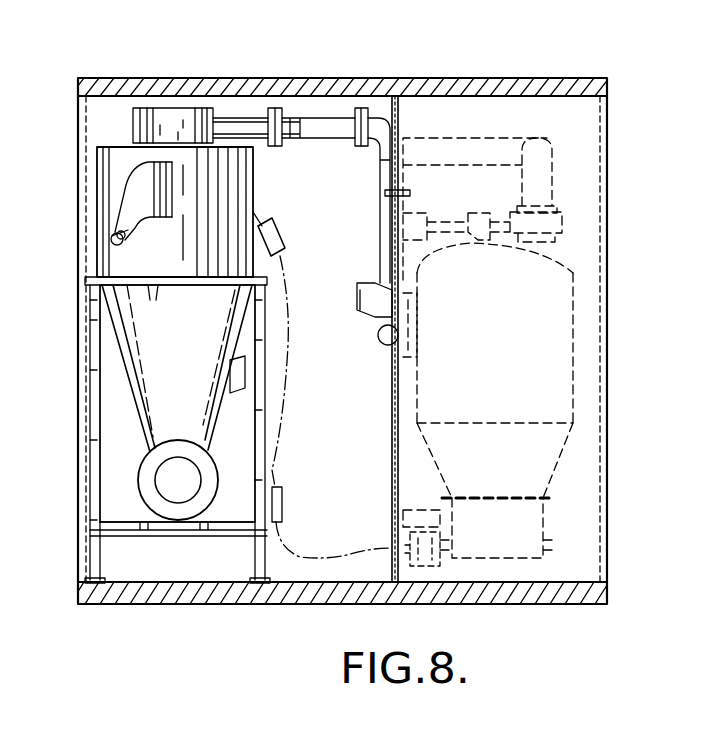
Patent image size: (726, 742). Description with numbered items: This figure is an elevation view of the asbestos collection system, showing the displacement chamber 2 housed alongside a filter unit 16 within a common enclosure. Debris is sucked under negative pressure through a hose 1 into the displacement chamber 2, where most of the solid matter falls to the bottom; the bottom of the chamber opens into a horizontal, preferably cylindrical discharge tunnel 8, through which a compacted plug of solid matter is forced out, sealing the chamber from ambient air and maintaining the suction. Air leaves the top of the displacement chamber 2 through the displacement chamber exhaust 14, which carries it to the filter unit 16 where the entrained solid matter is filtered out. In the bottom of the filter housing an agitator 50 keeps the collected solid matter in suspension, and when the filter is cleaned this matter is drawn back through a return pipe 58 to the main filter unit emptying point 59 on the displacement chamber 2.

The hose 1 is at (123, 206).
The displacement chamber 2 is at (116, 122).
The horizontal discharge tunnel 8 is at (188, 495).
The displacement chamber exhaust 14 is at (306, 116).
The filter unit 16 is at (580, 318).
The agitator 50 is at (520, 548).
The return pipe 58 is at (288, 385).
The main filter unit emptying point 59 is at (265, 232).